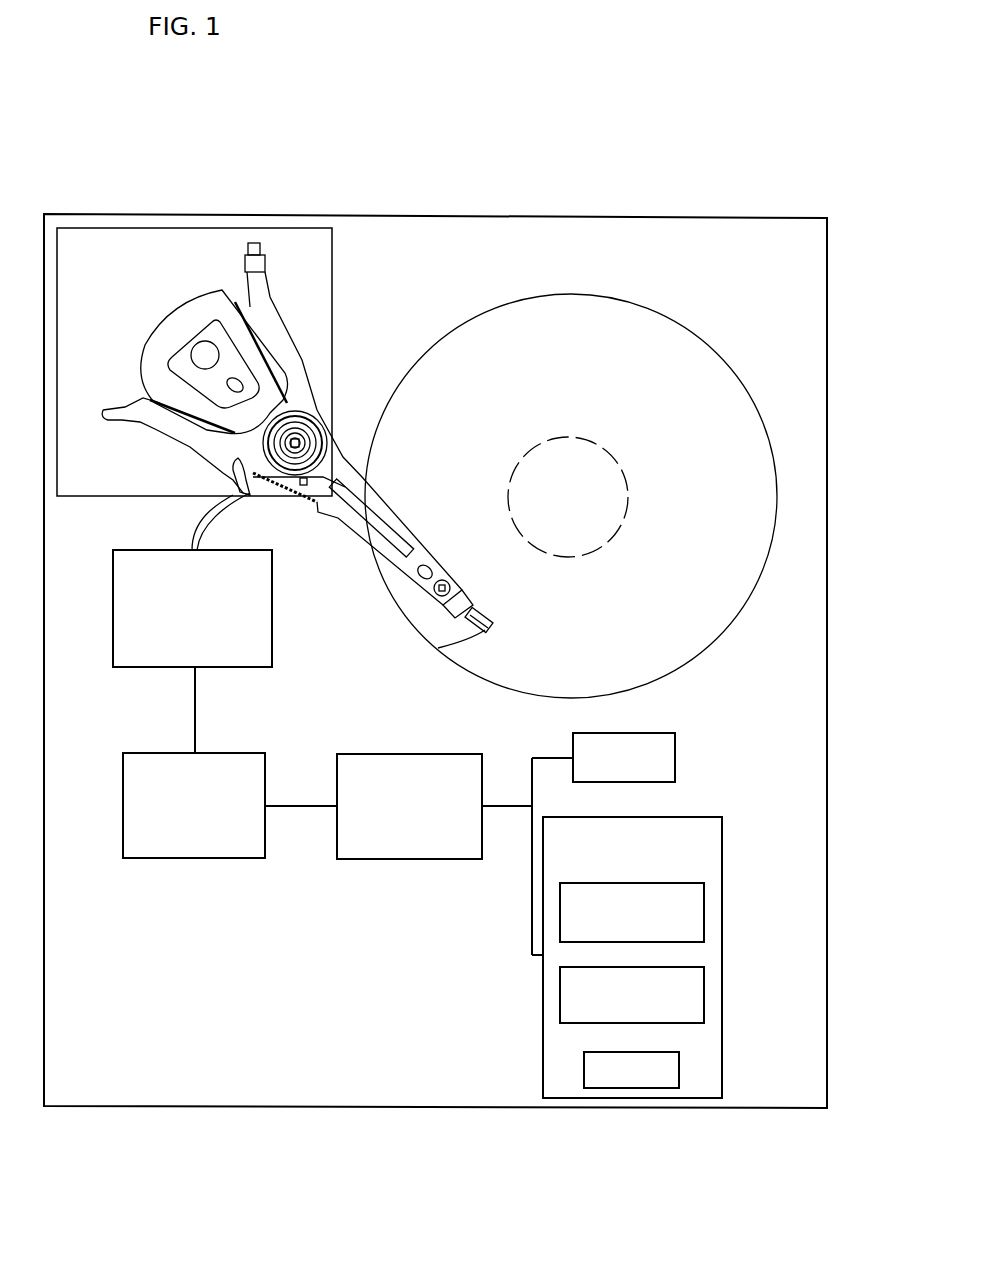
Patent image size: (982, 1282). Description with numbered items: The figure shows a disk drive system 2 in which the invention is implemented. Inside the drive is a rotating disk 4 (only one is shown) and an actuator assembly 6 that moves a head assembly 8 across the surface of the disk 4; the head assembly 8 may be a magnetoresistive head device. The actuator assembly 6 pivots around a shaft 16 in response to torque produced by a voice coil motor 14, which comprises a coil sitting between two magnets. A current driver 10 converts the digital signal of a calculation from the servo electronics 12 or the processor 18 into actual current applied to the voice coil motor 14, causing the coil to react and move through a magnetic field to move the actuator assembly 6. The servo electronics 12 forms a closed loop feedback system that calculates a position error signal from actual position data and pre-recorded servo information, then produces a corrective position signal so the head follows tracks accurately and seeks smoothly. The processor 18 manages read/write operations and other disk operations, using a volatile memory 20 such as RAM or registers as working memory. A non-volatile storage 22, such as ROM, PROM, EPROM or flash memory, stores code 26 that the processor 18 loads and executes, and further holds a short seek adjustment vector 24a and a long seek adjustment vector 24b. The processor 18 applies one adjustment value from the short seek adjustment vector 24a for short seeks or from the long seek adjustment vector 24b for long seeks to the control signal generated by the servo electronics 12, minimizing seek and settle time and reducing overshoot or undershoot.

The disk drive system 2 is at (630, 217).
The rotating disk 4 is at (686, 322).
The actuator assembly 6 is at (370, 487).
The head assembly 8 is at (438, 648).
The current driver 10 is at (272, 602).
The servo electronics 12 is at (268, 777).
The voice coil motor 14 is at (165, 326).
The shaft 16 is at (318, 423).
The processor 18 is at (450, 753).
The volatile memory 20 is at (677, 757).
The non-volatile storage 22 is at (724, 858).
The short seek adjustment vector 24a is at (705, 917).
The long seek adjustment vector 24b is at (705, 995).
The code 26 is at (680, 1070).